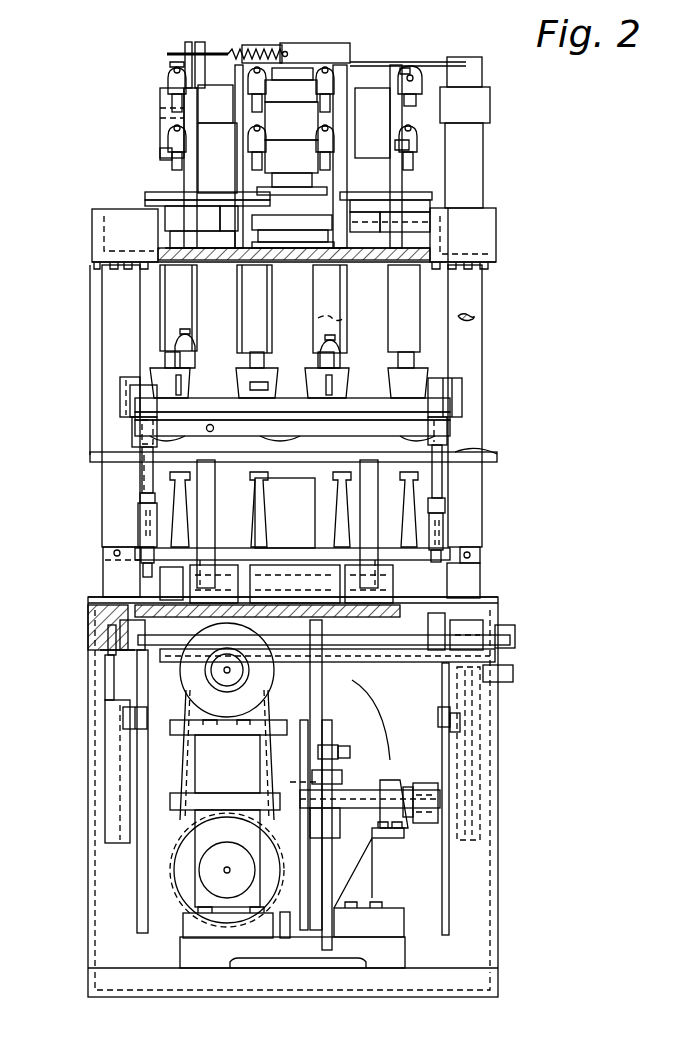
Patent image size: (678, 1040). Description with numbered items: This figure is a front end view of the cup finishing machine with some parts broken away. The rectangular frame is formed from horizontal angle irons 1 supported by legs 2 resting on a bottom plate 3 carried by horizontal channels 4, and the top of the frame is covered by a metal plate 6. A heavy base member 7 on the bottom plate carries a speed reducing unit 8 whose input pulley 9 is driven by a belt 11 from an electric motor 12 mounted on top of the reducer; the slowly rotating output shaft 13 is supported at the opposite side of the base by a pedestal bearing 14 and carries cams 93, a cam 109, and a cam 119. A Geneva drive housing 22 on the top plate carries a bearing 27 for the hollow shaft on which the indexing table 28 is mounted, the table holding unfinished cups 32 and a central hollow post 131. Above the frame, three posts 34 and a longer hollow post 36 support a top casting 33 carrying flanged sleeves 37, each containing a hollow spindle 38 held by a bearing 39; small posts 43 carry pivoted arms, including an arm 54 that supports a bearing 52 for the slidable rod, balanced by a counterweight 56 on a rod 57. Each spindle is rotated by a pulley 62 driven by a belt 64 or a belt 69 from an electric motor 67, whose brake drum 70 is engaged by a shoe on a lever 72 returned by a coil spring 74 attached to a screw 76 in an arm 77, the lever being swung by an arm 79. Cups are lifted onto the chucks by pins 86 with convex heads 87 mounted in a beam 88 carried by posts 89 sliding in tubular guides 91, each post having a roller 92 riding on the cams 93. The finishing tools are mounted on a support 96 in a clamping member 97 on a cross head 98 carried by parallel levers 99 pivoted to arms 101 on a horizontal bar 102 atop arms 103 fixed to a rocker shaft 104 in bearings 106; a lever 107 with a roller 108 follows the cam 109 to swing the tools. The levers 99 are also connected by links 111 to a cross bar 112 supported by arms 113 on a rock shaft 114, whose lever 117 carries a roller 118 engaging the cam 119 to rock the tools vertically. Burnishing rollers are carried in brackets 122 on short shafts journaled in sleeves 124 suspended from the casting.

The horizontal angle irons 1 is at (100, 648).
The legs 2 is at (480, 925).
The bottom plate 3 is at (490, 972).
The horizontal channels 4 is at (396, 978).
The metal plate 6 is at (94, 620).
The base member 7 is at (300, 955).
The speed reducing unit 8 is at (230, 775).
The pulley 9 is at (188, 890).
The belt 11 is at (190, 752).
The electric motor 12 is at (226, 692).
The output shaft 13 is at (412, 823).
The pedestal bearing 14 is at (396, 782).
The housing 22 is at (300, 535).
The bearing 27 is at (300, 504).
The indexing table 28 is at (90, 456).
The cups 32 is at (470, 437).
The top casting 33 is at (480, 236).
The posts 34 is at (118, 312).
The post 36 is at (478, 328).
The sleeves 37 is at (400, 292).
The spindle 38 is at (250, 358).
The bearing 39 is at (162, 156).
The posts 43 is at (185, 215).
The bearing 52 is at (168, 95).
The arm 54 is at (408, 66).
The counterweight 56 is at (462, 62).
The rod 57 is at (398, 78).
The pulley 62 is at (170, 193).
The belt 64 is at (148, 201).
The electric motor 67 is at (300, 101).
The belt 69 is at (368, 212).
The brake drum 70 is at (250, 48).
The lever 72 is at (335, 44).
The coil spring 74 is at (266, 45).
The screw 76 is at (185, 50).
The arm 77 is at (190, 70).
The arm 79 is at (380, 62).
The pins 86 is at (140, 515).
The head 87 is at (160, 490).
The beam 88 is at (450, 550).
The posts 89 is at (482, 600).
The tubular guides 91 is at (108, 700).
The roller 92 is at (146, 712).
The cams 93 is at (137, 870).
The support 96 is at (400, 388).
The clamping member 97 is at (405, 372).
The cross head 98 is at (220, 412).
The levers 99 is at (140, 395).
The arms 101 is at (133, 398).
The horizontal bar 102 is at (490, 456).
The arms 103 is at (208, 480).
The rocker shaft 104 is at (465, 580).
The bearings 106 is at (165, 590).
The lever 107 is at (312, 672).
The roller 108 is at (322, 780).
The cam 109 is at (300, 896).
The links 111 is at (440, 486).
The cross bar 112 is at (394, 690).
The arms 113 is at (504, 670).
The rock shaft 114 is at (122, 640).
The lever 117 is at (332, 688).
The roller 118 is at (326, 748).
The cam 119 is at (326, 870).
The brackets 122 is at (334, 378).
The sleeves 124 is at (338, 342).
The hollow post 131 is at (285, 312).